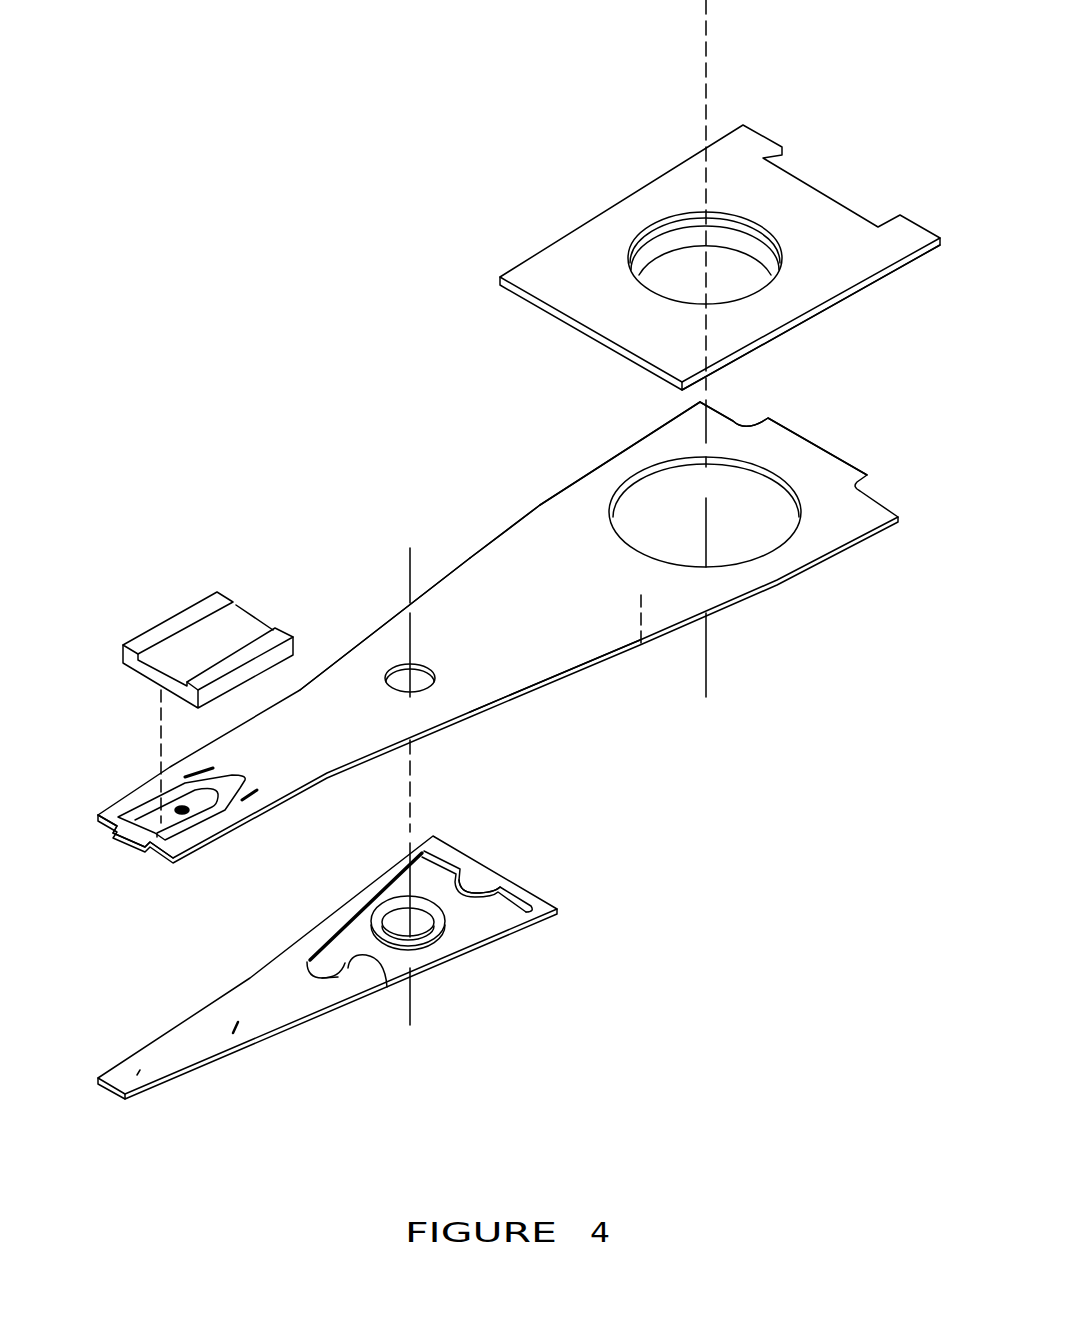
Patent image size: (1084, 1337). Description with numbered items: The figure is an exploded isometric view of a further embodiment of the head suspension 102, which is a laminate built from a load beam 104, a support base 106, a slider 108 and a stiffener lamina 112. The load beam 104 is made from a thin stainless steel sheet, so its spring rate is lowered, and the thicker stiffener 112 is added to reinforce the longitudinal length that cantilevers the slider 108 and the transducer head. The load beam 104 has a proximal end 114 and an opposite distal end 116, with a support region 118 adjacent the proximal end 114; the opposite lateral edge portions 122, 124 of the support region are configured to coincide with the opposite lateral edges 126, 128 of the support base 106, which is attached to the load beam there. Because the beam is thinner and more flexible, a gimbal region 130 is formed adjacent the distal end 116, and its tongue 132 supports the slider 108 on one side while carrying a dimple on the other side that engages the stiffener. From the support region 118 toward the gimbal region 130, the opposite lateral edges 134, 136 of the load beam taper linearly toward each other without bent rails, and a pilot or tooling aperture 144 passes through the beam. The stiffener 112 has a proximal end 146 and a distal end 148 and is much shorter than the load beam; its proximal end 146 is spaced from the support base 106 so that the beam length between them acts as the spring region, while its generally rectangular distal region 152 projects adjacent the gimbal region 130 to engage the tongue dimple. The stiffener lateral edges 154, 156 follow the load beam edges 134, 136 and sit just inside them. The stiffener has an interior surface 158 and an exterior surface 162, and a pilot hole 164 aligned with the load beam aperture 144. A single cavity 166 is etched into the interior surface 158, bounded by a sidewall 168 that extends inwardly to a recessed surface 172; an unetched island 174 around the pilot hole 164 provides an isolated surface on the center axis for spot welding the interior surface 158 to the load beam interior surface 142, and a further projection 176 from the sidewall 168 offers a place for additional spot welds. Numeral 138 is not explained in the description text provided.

The head suspension 102 is at (393, 378).
The load beam 104 is at (525, 550).
The support base 106 is at (783, 207).
The slider 108 is at (187, 617).
The stiffener lamina 112 is at (280, 1012).
The proximal end 114 is at (808, 444).
The distal end 116 is at (125, 848).
The support region 118 is at (813, 543).
The lateral edge portion 122 is at (618, 445).
The lateral edge portion 124 is at (795, 577).
The lateral edge 126 is at (585, 218).
The lateral edge 128 is at (863, 290).
The gimbal region 130 is at (150, 790).
The tongue 132 is at (200, 803).
The lateral edge 134 is at (450, 570).
The lateral edge 136 is at (593, 662).
The load beam spring region 138 is at (462, 668).
The load beam interior surface 142 is at (641, 643).
The pilot or tooling aperture 144 is at (403, 670).
The proximal end 146 is at (485, 876).
The distal end 148 is at (100, 1087).
The distal region 152 is at (137, 1075).
The lateral edge 154 is at (287, 947).
The lateral edge 156 is at (340, 1003).
The interior surface 158 is at (398, 968).
The exterior surface 162 is at (234, 1038).
The pilot or tooling hole 164 is at (417, 918).
The cavity 166 is at (338, 958).
The sidewall 168 is at (387, 990).
The recessed surface 172 is at (290, 962).
The island 174 is at (440, 928).
The projection 176 is at (477, 883).